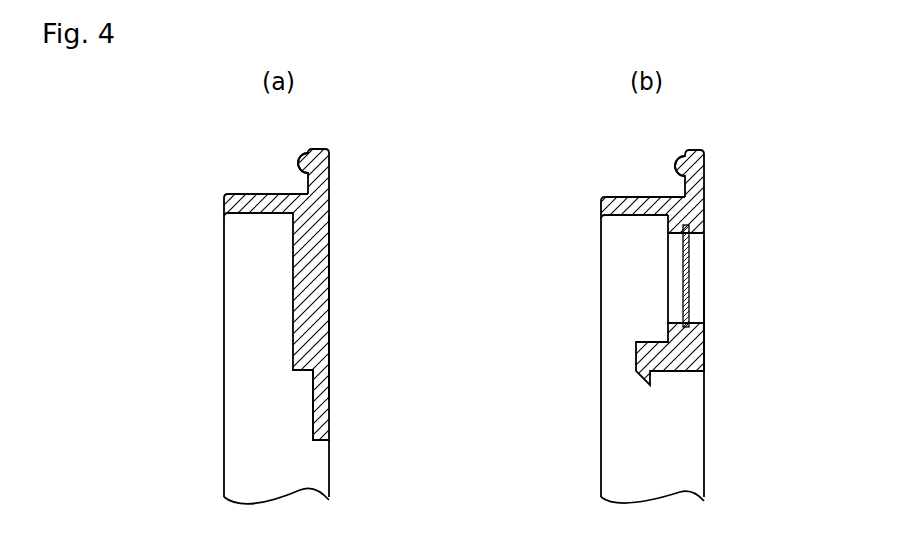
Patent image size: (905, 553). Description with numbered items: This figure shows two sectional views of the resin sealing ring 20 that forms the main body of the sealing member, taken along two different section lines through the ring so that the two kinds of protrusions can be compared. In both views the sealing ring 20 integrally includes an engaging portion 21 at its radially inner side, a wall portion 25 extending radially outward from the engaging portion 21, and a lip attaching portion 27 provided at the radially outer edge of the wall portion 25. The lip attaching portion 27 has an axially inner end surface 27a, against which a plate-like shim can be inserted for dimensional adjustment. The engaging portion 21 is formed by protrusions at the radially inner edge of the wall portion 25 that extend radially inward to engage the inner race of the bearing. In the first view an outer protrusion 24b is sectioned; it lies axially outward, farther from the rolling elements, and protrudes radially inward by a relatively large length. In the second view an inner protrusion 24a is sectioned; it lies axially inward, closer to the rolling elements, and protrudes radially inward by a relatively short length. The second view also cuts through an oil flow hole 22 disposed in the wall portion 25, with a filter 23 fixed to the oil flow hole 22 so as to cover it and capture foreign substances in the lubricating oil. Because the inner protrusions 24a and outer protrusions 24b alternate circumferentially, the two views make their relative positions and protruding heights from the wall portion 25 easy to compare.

The sealing ring 20 is at (330, 257).
The lip attaching portion 27 is at (270, 193).
The axially inner end surface of the lip attaching portion 27a is at (303, 154).
The wall portion 25 is at (313, 293).
The engaging portion 21 is at (508, 406).
The inner protrusion 24a is at (647, 378).
The outer protrusion 24b is at (320, 402).
The filter 23 is at (692, 254).
The oil flow hole 22 is at (697, 277).